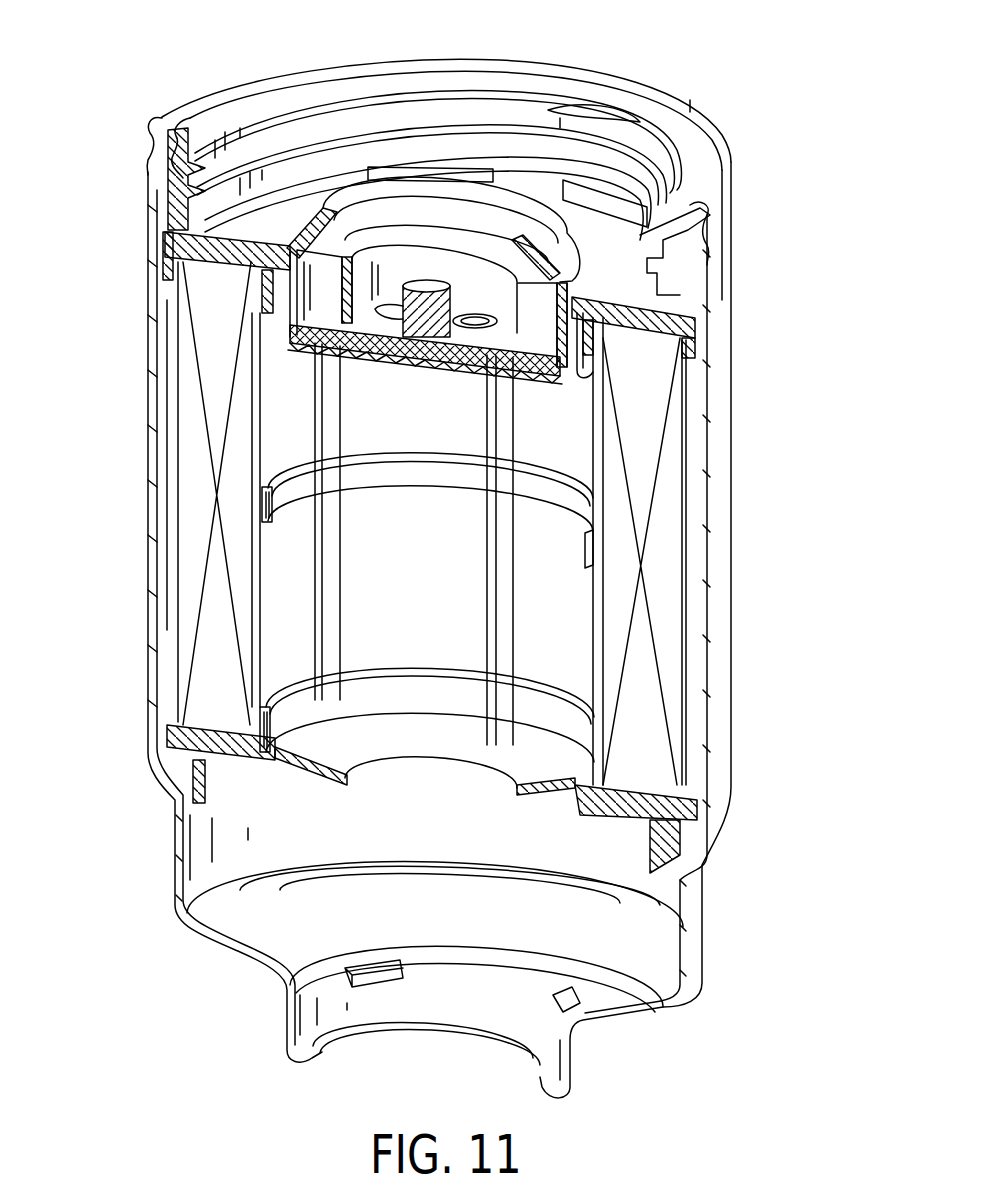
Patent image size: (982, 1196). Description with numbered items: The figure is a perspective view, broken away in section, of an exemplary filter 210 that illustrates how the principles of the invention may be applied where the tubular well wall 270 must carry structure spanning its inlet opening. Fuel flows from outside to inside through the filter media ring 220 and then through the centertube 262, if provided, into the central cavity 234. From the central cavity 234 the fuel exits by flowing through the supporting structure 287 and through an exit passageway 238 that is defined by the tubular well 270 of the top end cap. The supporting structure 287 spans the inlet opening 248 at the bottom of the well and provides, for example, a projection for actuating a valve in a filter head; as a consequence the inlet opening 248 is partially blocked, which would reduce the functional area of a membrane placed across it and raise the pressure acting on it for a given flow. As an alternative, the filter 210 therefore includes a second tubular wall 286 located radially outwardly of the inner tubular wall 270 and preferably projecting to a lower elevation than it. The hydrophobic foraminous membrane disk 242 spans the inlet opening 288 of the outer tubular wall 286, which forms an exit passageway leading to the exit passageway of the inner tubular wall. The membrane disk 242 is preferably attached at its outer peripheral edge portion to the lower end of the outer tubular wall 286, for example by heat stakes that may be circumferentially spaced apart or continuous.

The filter 210 is at (736, 114).
The filter media ring 220 is at (195, 470).
The central cavity 234 is at (438, 600).
The exit passageway 238 is at (405, 260).
The hydrophobic foraminous membrane disk 242 is at (407, 362).
The inlet opening 248 is at (478, 327).
The centertube 262 is at (590, 553).
The tubular well wall 270 is at (253, 297).
The second tubular wall 286 is at (563, 343).
The supporting structure 287 is at (430, 282).
The inlet opening of the outer tubular wall 288 is at (552, 384).